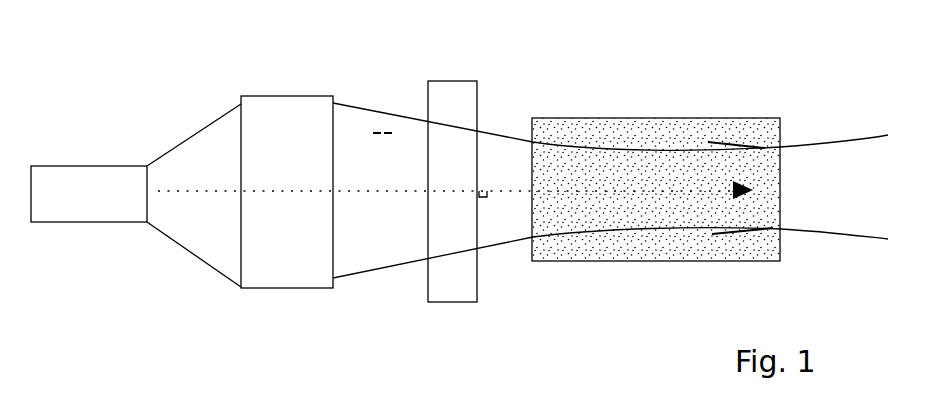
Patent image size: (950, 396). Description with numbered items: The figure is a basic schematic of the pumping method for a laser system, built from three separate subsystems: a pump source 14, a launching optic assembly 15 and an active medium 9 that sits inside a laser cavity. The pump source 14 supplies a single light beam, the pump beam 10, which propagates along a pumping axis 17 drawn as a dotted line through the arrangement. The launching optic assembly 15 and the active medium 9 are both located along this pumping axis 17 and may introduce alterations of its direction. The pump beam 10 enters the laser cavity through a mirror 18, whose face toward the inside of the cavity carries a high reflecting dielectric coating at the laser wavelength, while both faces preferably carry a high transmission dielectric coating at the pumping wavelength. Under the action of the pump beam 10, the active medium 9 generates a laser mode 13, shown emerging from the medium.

The active medium 9 is at (653, 108).
The pump beam 10 is at (195, 132).
The laser mode 13 is at (815, 147).
The pump source 14 is at (79, 158).
The launching optic assembly 15 is at (283, 90).
The pumping axis 17 is at (217, 205).
The mirror 18 is at (455, 312).